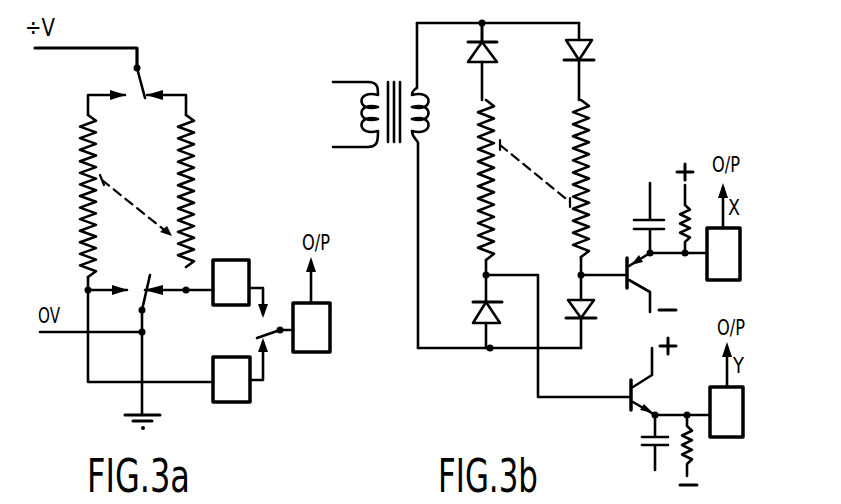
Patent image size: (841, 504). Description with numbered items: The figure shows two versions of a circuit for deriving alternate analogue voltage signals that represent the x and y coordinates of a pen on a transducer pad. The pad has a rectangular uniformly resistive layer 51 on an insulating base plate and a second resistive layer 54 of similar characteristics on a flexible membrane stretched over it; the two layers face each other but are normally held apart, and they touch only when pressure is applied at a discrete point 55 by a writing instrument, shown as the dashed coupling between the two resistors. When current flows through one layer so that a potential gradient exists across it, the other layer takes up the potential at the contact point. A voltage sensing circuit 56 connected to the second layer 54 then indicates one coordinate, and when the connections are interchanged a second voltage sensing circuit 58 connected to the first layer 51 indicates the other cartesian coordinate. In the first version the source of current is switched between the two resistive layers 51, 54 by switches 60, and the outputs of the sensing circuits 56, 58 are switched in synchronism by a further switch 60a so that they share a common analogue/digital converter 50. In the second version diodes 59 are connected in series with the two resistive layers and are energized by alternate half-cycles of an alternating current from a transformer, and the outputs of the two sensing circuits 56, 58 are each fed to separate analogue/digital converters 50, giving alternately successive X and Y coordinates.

In FIG. 3a, the analogue/digital converter 50 is at (311, 327).
In FIG. 3b, the analogue/digital converter 50 is at (725, 332).
In FIG. 3a, the resistive layer 51 is at (195, 135).
In FIG. 3b, the resistive layer 51 is at (590, 137).
In FIG. 3a, the second resistive layer 54 is at (82, 140).
In FIG. 3b, the second resistive layer 54 is at (477, 143).
In FIG. 3a, the discrete point 55 is at (128, 200).
In FIG. 3b, the discrete point 55 is at (522, 160).
In FIG. 3a, the voltage sensing circuit 56 is at (231, 379).
In FIG. 3b, the voltage sensing circuit 56 is at (642, 410).
In FIG. 3a, the second voltage sensing circuit 58 is at (231, 282).
In FIG. 3b, the second voltage sensing circuit 58 is at (638, 272).
In FIG. 3b, the diodes 59 is at (563, 50).
In FIG. 3a, the switches 60 is at (147, 78).
In FIG. 3a, the further switch 60a is at (272, 340).